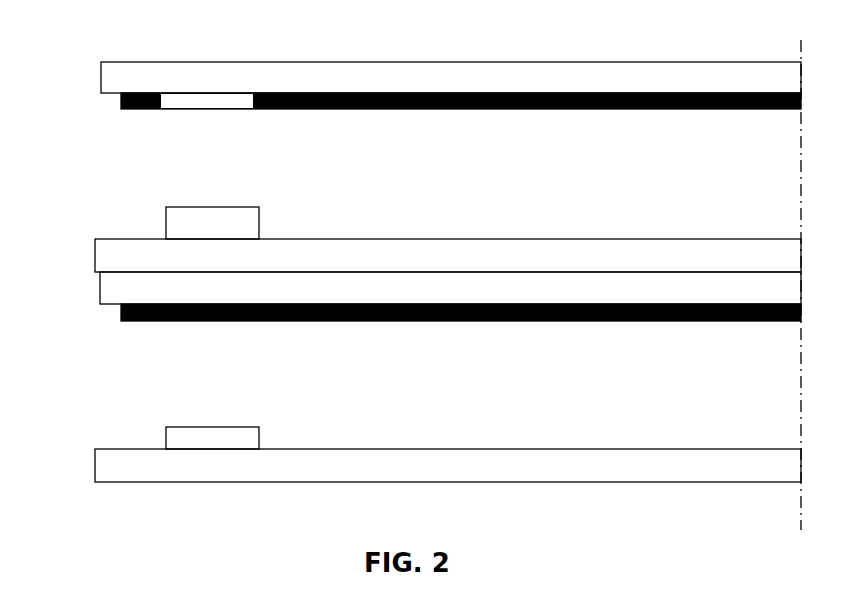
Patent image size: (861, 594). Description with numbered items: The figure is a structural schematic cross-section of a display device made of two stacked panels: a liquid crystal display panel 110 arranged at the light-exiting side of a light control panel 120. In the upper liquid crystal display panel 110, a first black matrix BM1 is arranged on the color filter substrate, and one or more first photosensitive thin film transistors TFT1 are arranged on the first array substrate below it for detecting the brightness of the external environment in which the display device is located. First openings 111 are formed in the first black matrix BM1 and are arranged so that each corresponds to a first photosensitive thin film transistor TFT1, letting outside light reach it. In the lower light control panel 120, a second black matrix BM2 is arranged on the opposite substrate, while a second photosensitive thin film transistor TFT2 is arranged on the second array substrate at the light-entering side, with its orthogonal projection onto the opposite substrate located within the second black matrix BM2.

The liquid crystal display panel 110 is at (414, 137).
The light control panel 120 is at (414, 377).
The first opening 111 is at (184, 99).
The first black matrix BM1 is at (332, 94).
The second black matrix BM2 is at (319, 321).
The first photosensitive thin film transistor TFT1 is at (212, 223).
The second photosensitive thin film transistor TFT2 is at (212, 438).